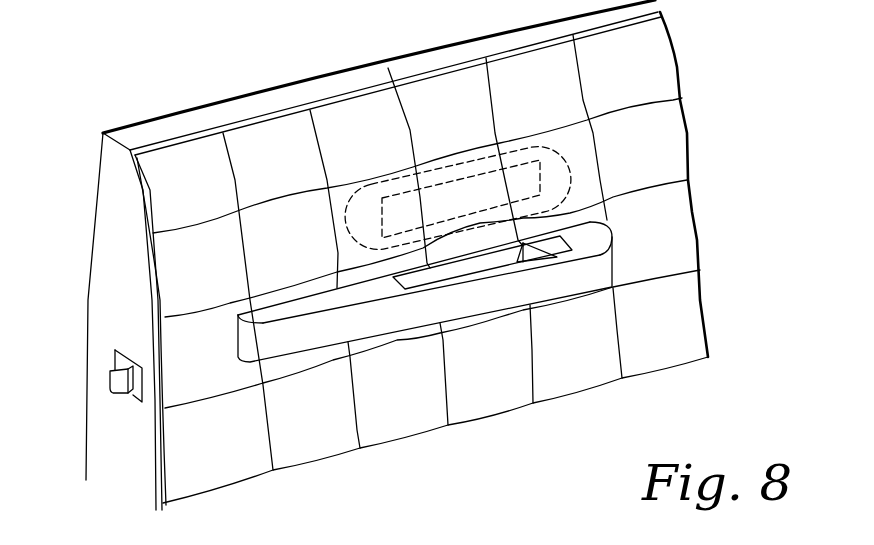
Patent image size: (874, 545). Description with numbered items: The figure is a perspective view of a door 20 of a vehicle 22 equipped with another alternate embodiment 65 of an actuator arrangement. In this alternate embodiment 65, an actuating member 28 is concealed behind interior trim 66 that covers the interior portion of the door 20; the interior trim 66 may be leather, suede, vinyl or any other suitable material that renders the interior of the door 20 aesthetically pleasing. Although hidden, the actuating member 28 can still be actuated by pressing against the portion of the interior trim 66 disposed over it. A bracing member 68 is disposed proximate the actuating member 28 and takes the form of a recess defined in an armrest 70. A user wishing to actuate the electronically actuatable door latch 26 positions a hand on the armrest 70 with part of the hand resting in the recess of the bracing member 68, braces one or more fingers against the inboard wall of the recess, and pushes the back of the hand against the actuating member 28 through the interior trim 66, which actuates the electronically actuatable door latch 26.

The door 20 is at (384, 58).
The vehicle 22 is at (240, 69).
The electronically actuatable door latch 26 is at (102, 352).
The actuating member 28 is at (492, 186).
The alternate embodiment 65 is at (362, 193).
The interior trim 66 is at (680, 217).
The bracing member 68 is at (530, 243).
The armrest 70 is at (380, 320).